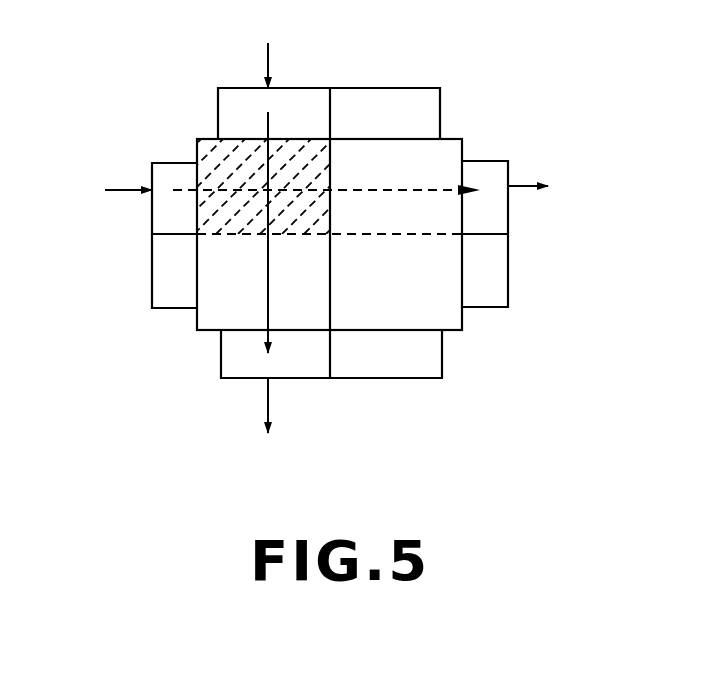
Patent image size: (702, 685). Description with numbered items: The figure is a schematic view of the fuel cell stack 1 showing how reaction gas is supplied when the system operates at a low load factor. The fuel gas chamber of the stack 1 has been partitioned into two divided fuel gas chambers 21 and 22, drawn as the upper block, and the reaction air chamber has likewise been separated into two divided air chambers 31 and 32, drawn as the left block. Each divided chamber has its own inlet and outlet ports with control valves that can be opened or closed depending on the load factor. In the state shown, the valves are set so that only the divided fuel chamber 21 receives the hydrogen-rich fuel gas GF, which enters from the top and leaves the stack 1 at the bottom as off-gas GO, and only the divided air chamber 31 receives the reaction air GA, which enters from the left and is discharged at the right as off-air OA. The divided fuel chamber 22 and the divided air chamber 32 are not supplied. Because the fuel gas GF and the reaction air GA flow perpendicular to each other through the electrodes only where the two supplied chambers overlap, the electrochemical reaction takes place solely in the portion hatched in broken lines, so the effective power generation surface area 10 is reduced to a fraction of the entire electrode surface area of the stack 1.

The stack 1 is at (168, 158).
The effective power generation surface area 10 is at (298, 230).
The divided fuel gas chamber 21 is at (234, 113).
The divided fuel gas chamber 22 is at (422, 110).
The divided air chamber 31 is at (166, 217).
The divided air chamber 32 is at (167, 287).
The fuel gas GF is at (281, 34).
The off-gas GO is at (270, 405).
The reaction air GA is at (126, 190).
The off-air OA is at (522, 186).